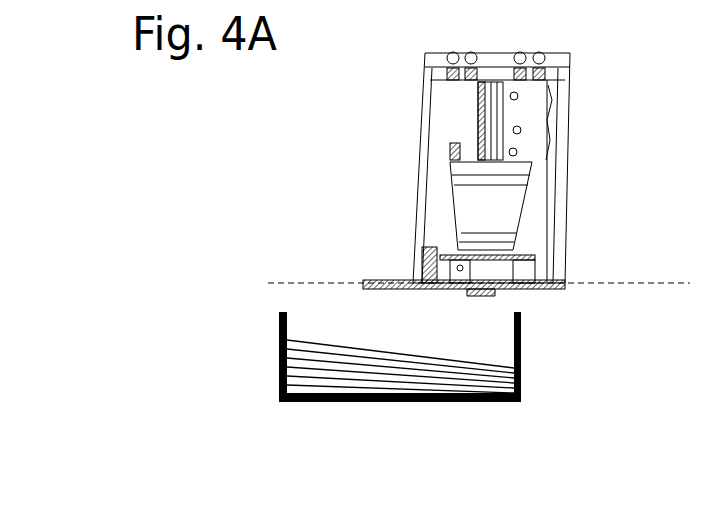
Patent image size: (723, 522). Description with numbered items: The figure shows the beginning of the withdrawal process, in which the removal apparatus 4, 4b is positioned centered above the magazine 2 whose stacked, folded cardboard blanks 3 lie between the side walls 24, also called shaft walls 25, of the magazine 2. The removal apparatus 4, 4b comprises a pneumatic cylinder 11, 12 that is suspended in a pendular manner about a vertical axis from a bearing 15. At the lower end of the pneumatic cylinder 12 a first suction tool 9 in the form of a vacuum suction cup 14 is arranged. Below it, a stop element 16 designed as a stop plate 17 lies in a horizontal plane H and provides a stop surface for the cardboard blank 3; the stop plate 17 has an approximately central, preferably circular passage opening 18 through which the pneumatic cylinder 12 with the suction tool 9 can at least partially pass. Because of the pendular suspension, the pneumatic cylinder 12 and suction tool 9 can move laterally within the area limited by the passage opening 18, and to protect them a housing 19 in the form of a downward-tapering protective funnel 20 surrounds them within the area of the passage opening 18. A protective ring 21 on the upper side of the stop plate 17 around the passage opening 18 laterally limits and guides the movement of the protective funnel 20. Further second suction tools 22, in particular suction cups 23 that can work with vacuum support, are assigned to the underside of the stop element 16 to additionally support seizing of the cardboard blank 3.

The magazine 2 is at (218, 416).
The cardboard blank 3 is at (433, 378).
The removal apparatus 4 is at (475, 168).
The removal apparatus 4b is at (359, 170).
The first suction tool 9 is at (404, 256).
The vacuum suction cup 14 is at (462, 292).
The piston 11 is at (532, 86).
The pneumatic cylinder 12 is at (492, 115).
The bearing 15 is at (490, 69).
The stop element 16 is at (515, 264).
The stop plate 17 is at (560, 284).
The passage opening 18 is at (527, 283).
The housing 19 is at (556, 190).
The protective funnel 20 is at (520, 203).
The protective ring 21 is at (535, 268).
The second suction tool 22 is at (377, 268).
The suction cup 23 is at (412, 290).
The side wall 24 is at (331, 357).
The shaft wall 25 is at (287, 342).
The horizontal plane H is at (488, 282).